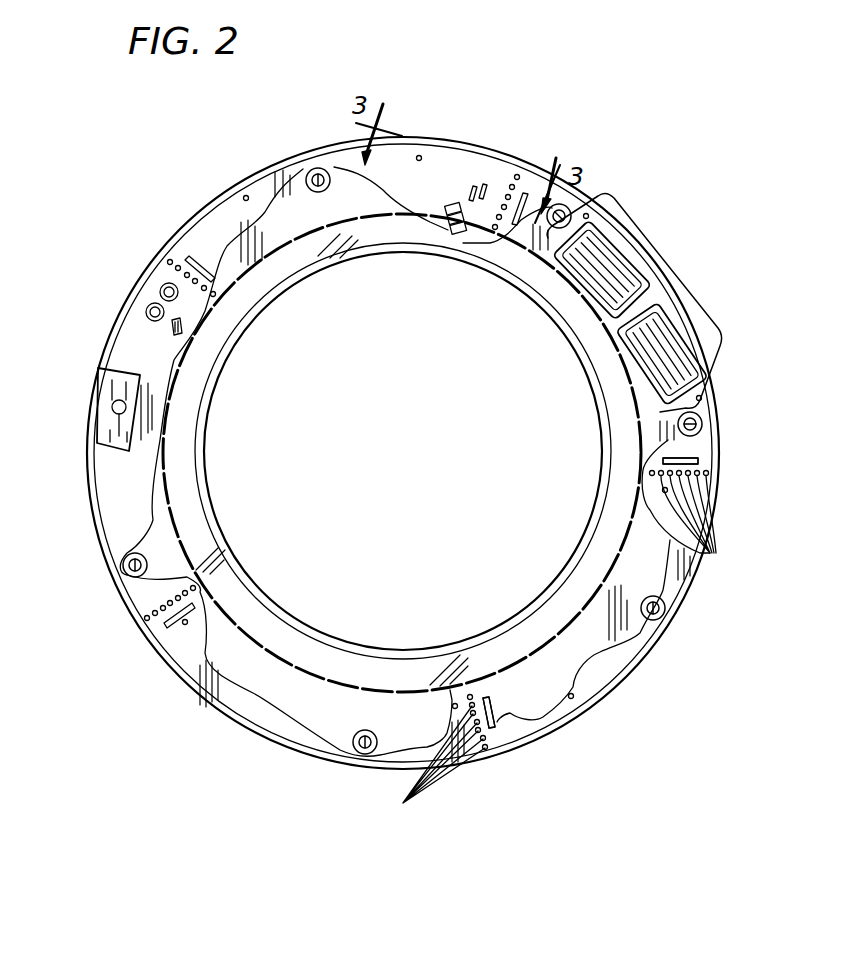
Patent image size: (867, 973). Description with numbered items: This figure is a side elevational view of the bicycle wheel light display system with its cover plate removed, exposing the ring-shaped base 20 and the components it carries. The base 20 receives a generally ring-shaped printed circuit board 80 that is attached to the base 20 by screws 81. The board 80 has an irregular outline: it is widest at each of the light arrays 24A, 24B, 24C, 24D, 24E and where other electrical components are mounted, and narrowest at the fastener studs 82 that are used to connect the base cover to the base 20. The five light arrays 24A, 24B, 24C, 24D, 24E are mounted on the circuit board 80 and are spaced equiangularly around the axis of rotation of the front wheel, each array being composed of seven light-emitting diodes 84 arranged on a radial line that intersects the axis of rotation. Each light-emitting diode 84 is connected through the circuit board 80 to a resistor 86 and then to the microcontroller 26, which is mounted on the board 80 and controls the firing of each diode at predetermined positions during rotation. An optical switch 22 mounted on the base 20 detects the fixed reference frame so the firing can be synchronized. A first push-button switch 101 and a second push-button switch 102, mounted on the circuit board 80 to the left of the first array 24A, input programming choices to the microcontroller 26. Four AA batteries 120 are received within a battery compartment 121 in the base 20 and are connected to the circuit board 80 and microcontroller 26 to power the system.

The base 20 is at (724, 510).
The optical switch 22 is at (453, 205).
The first light array 24A is at (182, 248).
The second light array 24B is at (128, 628).
The third light array 24C is at (496, 767).
The fourth light array 24D is at (733, 476).
The fifth light array 24E is at (538, 148).
The microcontroller 26 is at (100, 417).
The printed circuit board 80 is at (600, 652).
The screws 81 is at (247, 195).
The fastener studs 82 is at (664, 604).
The light-emitting diodes 84 is at (712, 553).
The resistor 86 is at (168, 326).
The first push-button switch 101 is at (148, 307).
The second push-button switch 102 is at (162, 287).
The batteries 120 is at (675, 318).
The battery compartment 121 is at (694, 355).